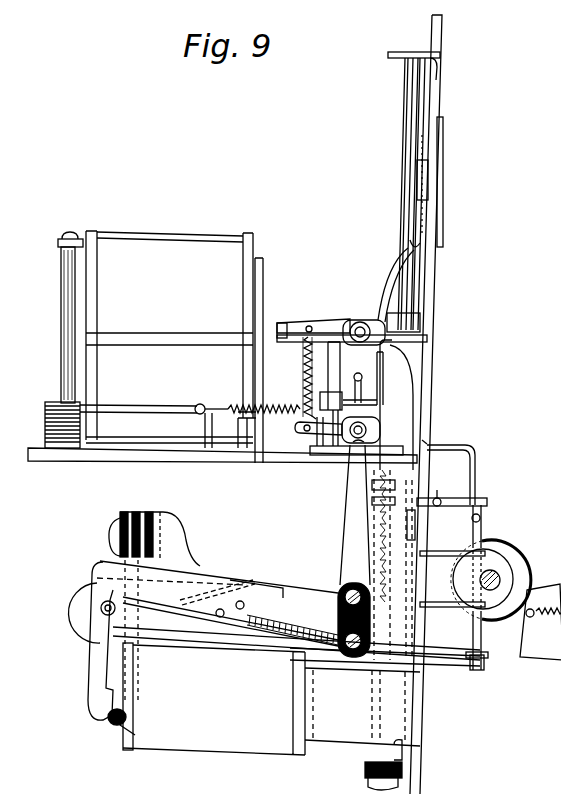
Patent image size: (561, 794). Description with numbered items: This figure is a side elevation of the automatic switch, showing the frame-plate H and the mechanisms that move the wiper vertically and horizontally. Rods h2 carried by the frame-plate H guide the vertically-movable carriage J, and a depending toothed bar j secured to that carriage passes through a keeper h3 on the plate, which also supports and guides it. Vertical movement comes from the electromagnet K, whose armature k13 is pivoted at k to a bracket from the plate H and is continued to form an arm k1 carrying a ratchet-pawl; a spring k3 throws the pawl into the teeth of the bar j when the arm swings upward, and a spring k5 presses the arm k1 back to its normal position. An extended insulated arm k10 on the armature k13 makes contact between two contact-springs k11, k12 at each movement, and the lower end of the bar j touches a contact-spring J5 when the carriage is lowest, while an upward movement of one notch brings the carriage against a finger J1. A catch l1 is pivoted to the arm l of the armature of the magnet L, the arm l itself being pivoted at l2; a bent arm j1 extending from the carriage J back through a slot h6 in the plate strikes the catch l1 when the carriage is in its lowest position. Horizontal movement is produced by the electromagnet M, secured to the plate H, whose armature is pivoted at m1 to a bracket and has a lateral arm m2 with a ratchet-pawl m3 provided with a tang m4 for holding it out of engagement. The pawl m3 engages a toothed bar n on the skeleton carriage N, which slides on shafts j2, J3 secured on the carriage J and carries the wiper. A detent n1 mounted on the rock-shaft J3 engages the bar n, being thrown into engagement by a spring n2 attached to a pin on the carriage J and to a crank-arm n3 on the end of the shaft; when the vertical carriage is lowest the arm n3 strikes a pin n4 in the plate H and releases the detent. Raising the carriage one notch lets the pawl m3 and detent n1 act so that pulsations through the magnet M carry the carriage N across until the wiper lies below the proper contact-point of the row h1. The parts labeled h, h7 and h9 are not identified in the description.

The frame-plate H is at (437, 279).
The plate h is at (440, 158).
The contact-points h1 is at (425, 216).
The rods h2 is at (407, 125).
The keeper h3 is at (452, 513).
The slot h6 is at (433, 439).
The ratchet rod h7 is at (372, 495).
The bolt h9 is at (438, 496).
The electromagnet M is at (174, 347).
The pivot m1 is at (57, 246).
The lateral arm m2 is at (128, 406).
The ratchet-pawl m3 is at (315, 390).
The tang m4 is at (330, 458).
The toothed bar n is at (372, 404).
The detent n1 is at (332, 368).
The spring n2 is at (301, 362).
The crank-arm n3 is at (313, 326).
The pin n4 is at (300, 320).
The skeleton carriage N is at (372, 382).
The vertically-movable carriage J is at (392, 364).
The finger J1 is at (348, 533).
The rock-shaft J3 is at (358, 323).
The contact-spring J5 is at (366, 772).
The toothed bar j is at (405, 752).
The bent arm j1 is at (478, 452).
The shaft j2 is at (368, 428).
The electromagnet K is at (271, 699).
The pivot k is at (100, 607).
The arm k1 is at (208, 582).
The spring k3 is at (280, 641).
The spring k5 is at (160, 612).
The insulated arm k10 is at (110, 722).
The contact-spring k11 is at (170, 577).
The contact-spring k12 is at (190, 535).
The armature k13 is at (88, 660).
The magnet L is at (516, 560).
The arm l is at (483, 526).
The catch l1 is at (471, 528).
The pivot l2 is at (480, 668).